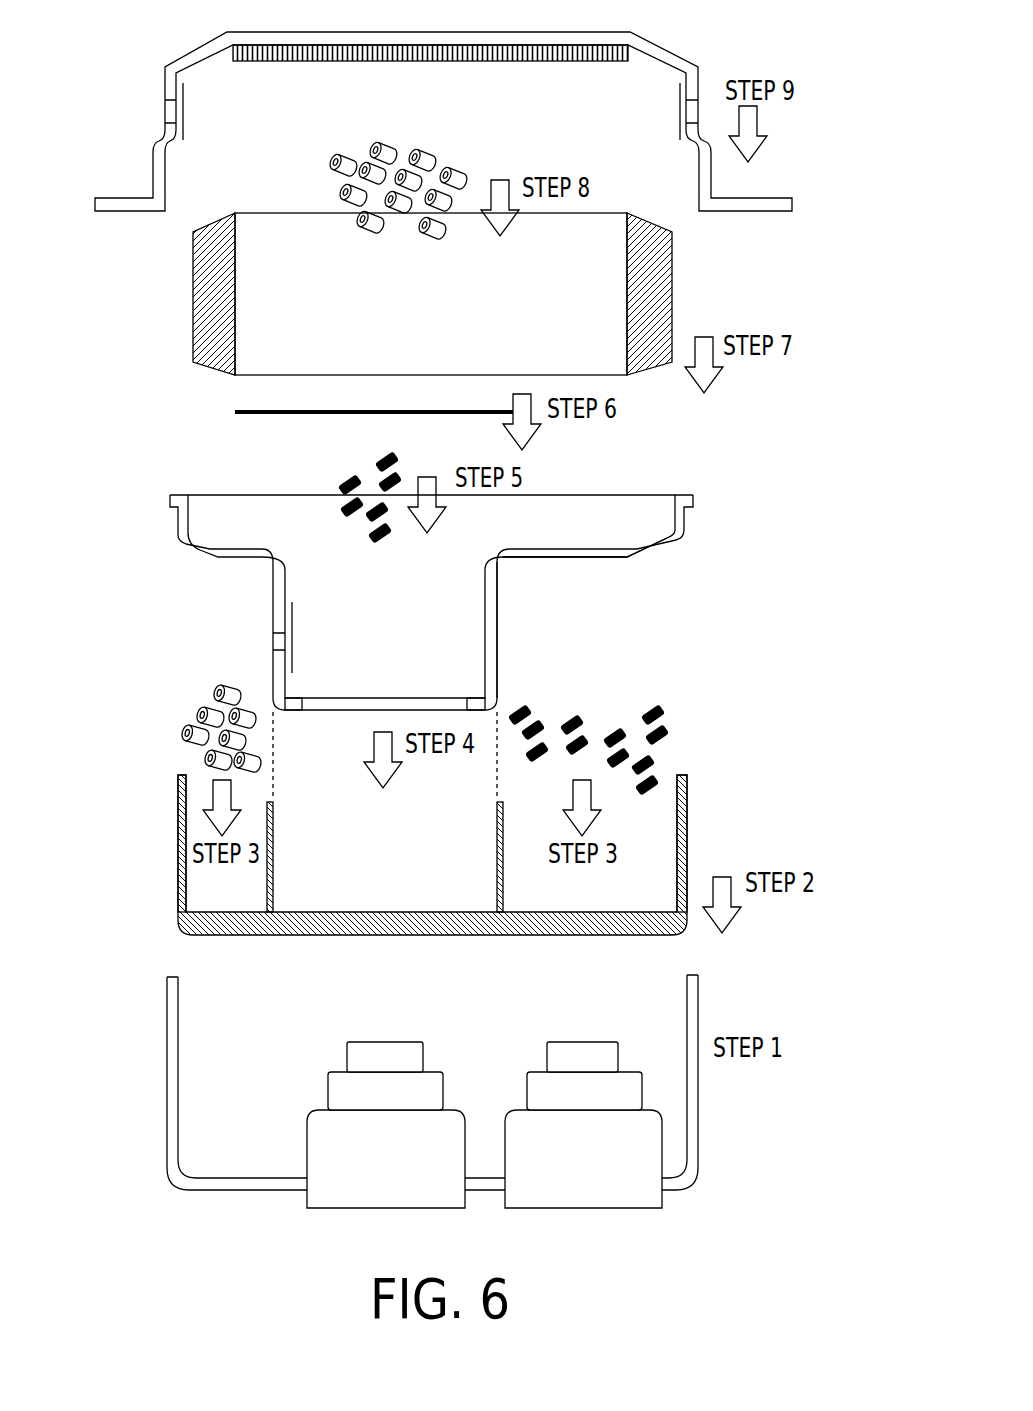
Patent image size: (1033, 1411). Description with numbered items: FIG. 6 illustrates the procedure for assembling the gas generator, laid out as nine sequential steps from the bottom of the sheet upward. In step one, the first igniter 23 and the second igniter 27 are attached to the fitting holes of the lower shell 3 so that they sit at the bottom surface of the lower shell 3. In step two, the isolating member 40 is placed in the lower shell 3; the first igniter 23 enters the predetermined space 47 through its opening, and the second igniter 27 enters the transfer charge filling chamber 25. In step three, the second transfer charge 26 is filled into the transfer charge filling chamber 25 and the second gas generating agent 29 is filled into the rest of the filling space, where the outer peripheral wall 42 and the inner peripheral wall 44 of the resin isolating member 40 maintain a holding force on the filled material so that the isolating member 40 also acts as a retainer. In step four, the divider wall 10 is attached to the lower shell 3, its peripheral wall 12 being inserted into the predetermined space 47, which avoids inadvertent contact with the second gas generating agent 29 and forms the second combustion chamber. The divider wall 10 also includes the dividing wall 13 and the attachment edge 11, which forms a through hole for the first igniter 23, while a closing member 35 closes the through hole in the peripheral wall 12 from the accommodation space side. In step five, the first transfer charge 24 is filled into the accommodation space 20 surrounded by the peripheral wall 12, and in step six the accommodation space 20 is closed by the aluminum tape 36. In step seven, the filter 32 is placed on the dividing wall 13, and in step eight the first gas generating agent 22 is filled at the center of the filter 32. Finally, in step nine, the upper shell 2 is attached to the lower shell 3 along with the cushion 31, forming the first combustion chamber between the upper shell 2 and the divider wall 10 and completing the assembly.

The upper shell 2 is at (97, 214).
The cushion 31 is at (410, 44).
The first gas generating agent 22 is at (428, 160).
The filter 32 is at (643, 228).
The aluminum tape 36 is at (237, 416).
The first transfer charge 24 is at (340, 480).
The divider wall 10 is at (700, 496).
The dividing wall 13 is at (510, 548).
The peripheral wall 12 is at (498, 655).
The closing member 35 is at (298, 604).
The attachment edge 11 is at (300, 702).
The accommodation space 20 is at (423, 663).
The second gas generating agent 29 is at (183, 733).
The second transfer charge 26 is at (672, 708).
The isolating member 40 is at (178, 920).
The outer peripheral wall 42 is at (178, 817).
The inner peripheral wall 44 is at (275, 890).
The predetermined space 47 is at (396, 896).
The transfer charge filling chamber 25 is at (615, 898).
The lower shell 3 is at (693, 1132).
The first igniter 23 is at (396, 1176).
The second igniter 27 is at (596, 1176).